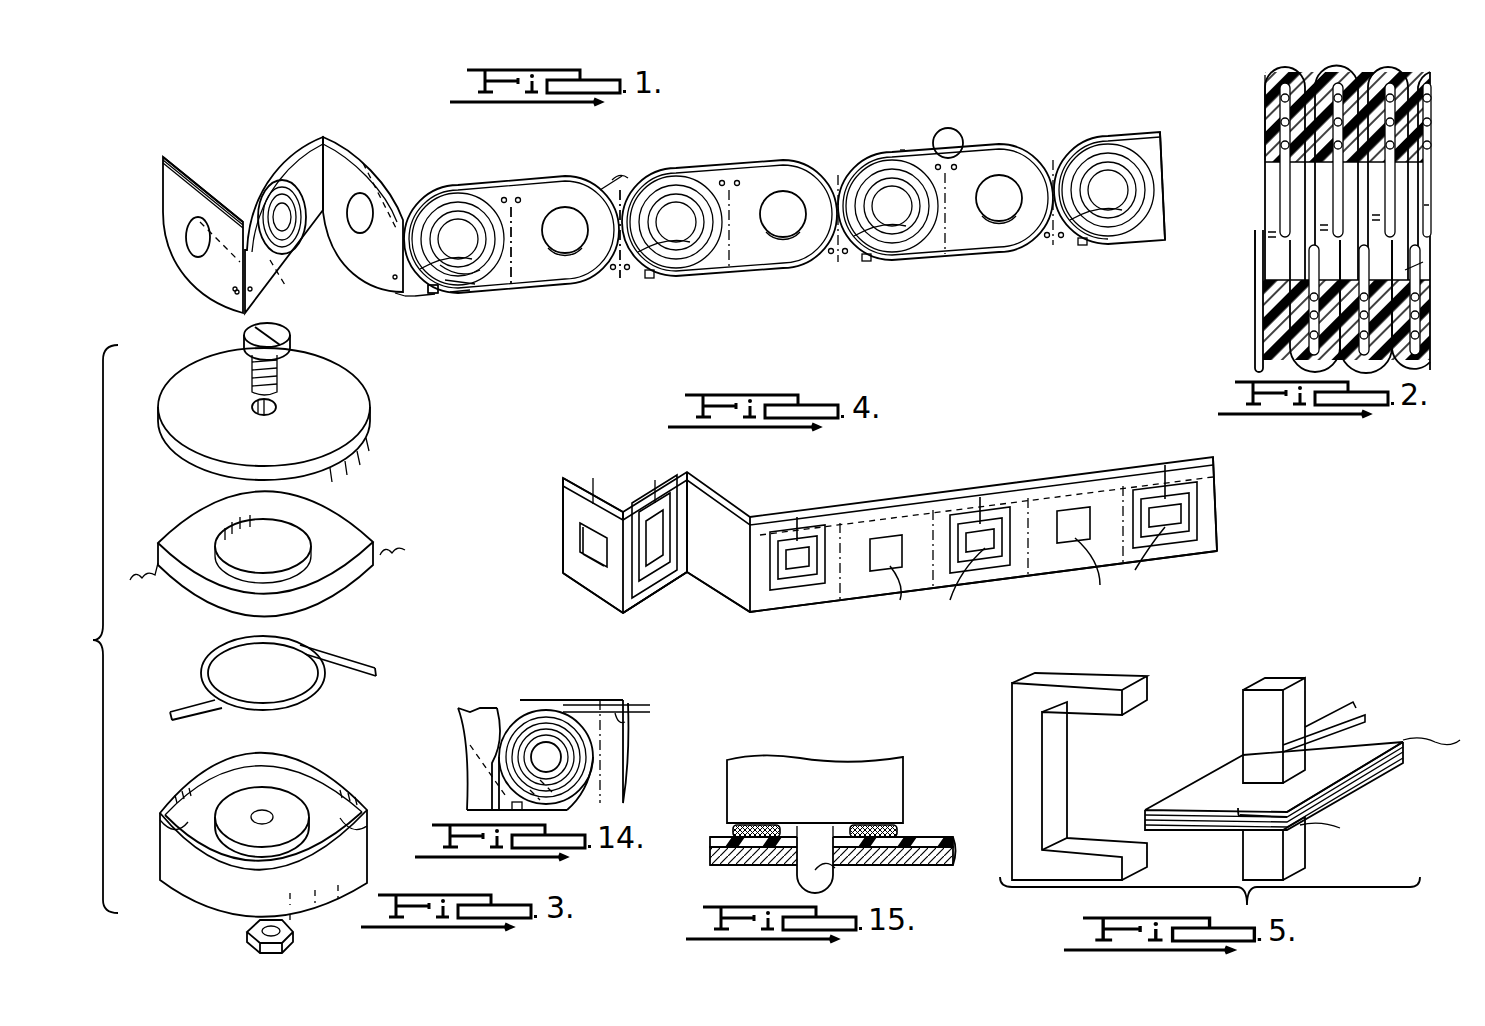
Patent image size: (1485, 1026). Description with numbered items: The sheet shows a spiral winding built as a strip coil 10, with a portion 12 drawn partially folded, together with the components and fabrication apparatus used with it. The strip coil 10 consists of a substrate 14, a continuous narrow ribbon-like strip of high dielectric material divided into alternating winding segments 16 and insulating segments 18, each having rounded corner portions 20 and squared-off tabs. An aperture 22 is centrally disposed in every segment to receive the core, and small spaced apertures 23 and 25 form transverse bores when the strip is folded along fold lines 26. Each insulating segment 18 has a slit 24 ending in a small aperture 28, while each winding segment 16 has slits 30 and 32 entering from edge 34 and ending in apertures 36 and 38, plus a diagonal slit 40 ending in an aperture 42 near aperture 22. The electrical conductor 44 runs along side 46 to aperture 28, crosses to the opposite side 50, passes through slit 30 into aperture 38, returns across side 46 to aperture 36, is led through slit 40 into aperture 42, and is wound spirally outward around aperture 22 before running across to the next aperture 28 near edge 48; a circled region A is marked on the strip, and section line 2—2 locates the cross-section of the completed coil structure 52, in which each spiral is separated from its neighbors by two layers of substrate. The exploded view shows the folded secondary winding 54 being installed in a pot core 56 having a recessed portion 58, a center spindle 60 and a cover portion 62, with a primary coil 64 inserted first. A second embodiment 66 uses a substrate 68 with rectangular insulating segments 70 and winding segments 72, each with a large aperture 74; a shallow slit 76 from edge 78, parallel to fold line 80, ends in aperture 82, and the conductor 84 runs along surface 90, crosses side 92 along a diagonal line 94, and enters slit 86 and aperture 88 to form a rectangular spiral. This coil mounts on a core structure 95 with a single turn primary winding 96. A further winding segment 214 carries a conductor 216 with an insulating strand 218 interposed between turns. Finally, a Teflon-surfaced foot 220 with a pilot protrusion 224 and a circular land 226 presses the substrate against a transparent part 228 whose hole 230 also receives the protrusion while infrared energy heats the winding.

In FIG. 1, the strip coil 10 is at (923, 120).
In FIG. 1, the detail area A is at (960, 124).
In FIG. 1, the portion 12 is at (158, 118).
In FIG. 1, the substrate 14 is at (1163, 150).
In FIG. 2, the substrate 14 is at (1265, 153).
In FIG. 1, the winding segment 16 is at (284, 250).
In FIG. 2, the winding segment 16 is at (1300, 80).
In FIG. 15, the winding segment 16 is at (950, 842).
In FIG. 1, the insulating segment 18 is at (197, 292).
In FIG. 2, the insulating segment 18 is at (1272, 80).
In FIG. 1, the rounded corner portions 20 is at (622, 200).
In FIG. 1, the aperture 22 is at (443, 220).
In FIG. 2, the aperture 22 is at (1423, 277).
In FIG. 15, the aperture 22 is at (815, 835).
In FIG. 1, the small aperture 23 is at (170, 230).
In FIG. 1, the slit 24 is at (572, 178).
In FIG. 1, the small aperture 25 is at (315, 163).
In FIG. 1, the fold line 26 is at (520, 188).
In FIG. 1, the small aperture 28 is at (598, 190).
In FIG. 1, the slit 30 is at (425, 300).
In FIG. 1, the slit 32 is at (440, 296).
In FIG. 1, the edge 34 is at (400, 295).
In FIG. 1, the small aperture 36 is at (462, 296).
In FIG. 1, the small aperture 38 is at (412, 298).
In FIG. 1, the slit 40 is at (465, 285).
In FIG. 1, the small aperture 42 is at (458, 272).
In FIG. 1, the electrical conductor 44 is at (168, 182).
In FIG. 2, the electrical conductor 44 is at (1426, 82).
In FIG. 15, the electrical conductor 44 is at (878, 852).
In FIG. 1, the side 46 is at (167, 228).
In FIG. 15, the side 46 is at (918, 838).
In FIG. 1, the edge 48 is at (185, 165).
In FIG. 15, the edge 48 is at (953, 852).
In FIG. 1, the side 50 is at (227, 193).
In FIG. 2, the completed coil structure 52 is at (1240, 278).
In FIG. 3, the strip coil secondary winding 54 is at (353, 528).
In FIG. 3, the pot core 56 is at (347, 778).
In FIG. 3, the recessed portion 58 is at (320, 808).
In FIG. 3, the center spindle 60 is at (290, 807).
In FIG. 3, the cover portion 62 is at (370, 410).
In FIG. 3, the primary coil 64 is at (380, 670).
In FIG. 4, the strip coil 66 is at (1120, 449).
In FIG. 5, the strip coil 66 is at (1391, 728).
In FIG. 4, the substrate 68 is at (1218, 497).
In FIG. 4, the insulating segment 70 is at (600, 595).
In FIG. 4, the winding segment 72 is at (665, 600).
In FIG. 4, the aperture 74 is at (900, 600).
In FIG. 4, the slit 76 is at (618, 508).
In FIG. 4, the edge 78 is at (593, 482).
In FIG. 4, the fold line 80 is at (645, 605).
In FIG. 4, the small aperture 82 is at (648, 515).
In FIG. 4, the electrical conductor 84 is at (560, 490).
In FIG. 5, the electrical conductor 84 is at (1408, 742).
In FIG. 4, the slit 86 is at (797, 530).
In FIG. 4, the aperture 88 is at (800, 530).
In FIG. 4, the surface 90 is at (585, 573).
In FIG. 4, the side 92 is at (561, 550).
In FIG. 4, the diagonal line 94 is at (668, 487).
In FIG. 5, the core structure 95 is at (1147, 686).
In FIG. 5, the single turn primary winding 96 is at (1345, 702).
In FIG. 14, the winding segment 214 is at (568, 700).
In FIG. 14, the conductor 216 is at (640, 708).
In FIG. 14, the second strand 218 is at (625, 725).
In FIG. 15, the foot portion 220 is at (903, 772).
In FIG. 15, the pilot protrusion 224 is at (805, 880).
In FIG. 15, the circular land 226 is at (838, 832).
In FIG. 15, the transparent machine part 228 is at (953, 862).
In FIG. 15, the hole 230 is at (830, 870).
In FIG. 1, the section line 2 is at (148, 228).